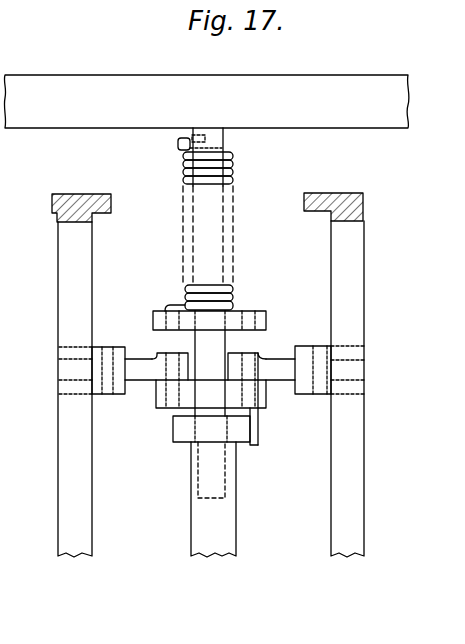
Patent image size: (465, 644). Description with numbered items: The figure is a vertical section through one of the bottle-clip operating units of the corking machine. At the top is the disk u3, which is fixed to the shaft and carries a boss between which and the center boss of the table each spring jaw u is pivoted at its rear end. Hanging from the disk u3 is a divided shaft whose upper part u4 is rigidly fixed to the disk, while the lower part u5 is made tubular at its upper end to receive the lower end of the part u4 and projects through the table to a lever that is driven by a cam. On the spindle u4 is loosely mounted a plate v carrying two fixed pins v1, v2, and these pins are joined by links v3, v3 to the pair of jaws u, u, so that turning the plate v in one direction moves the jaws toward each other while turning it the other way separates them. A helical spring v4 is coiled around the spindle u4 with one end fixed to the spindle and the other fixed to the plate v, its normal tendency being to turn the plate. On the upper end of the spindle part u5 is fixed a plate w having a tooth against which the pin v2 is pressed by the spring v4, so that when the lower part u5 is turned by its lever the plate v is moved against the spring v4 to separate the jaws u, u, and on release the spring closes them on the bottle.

The spring jaws u is at (52, 203).
The disk u3 is at (206, 101).
The spindle part u4 is at (222, 149).
The spindle part u5 is at (231, 518).
The plate v is at (264, 320).
The pin v1 is at (165, 353).
The pin v2 is at (259, 353).
The links v3 is at (291, 378).
The helical spring v4 is at (235, 182).
The plate w is at (227, 432).